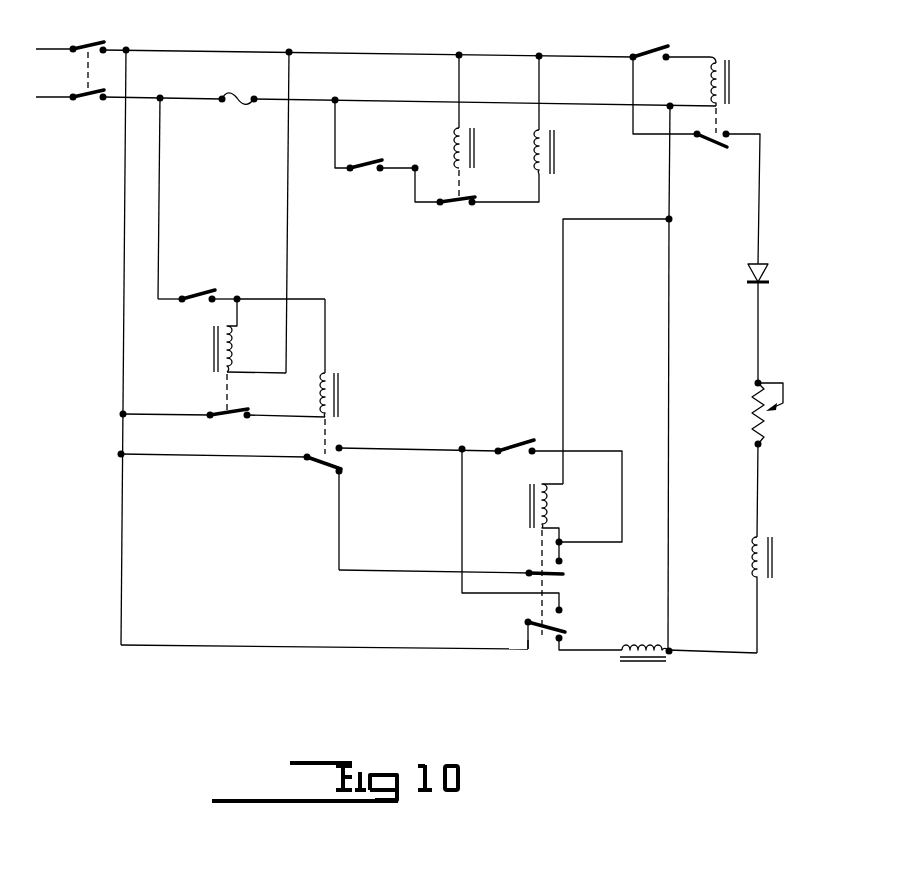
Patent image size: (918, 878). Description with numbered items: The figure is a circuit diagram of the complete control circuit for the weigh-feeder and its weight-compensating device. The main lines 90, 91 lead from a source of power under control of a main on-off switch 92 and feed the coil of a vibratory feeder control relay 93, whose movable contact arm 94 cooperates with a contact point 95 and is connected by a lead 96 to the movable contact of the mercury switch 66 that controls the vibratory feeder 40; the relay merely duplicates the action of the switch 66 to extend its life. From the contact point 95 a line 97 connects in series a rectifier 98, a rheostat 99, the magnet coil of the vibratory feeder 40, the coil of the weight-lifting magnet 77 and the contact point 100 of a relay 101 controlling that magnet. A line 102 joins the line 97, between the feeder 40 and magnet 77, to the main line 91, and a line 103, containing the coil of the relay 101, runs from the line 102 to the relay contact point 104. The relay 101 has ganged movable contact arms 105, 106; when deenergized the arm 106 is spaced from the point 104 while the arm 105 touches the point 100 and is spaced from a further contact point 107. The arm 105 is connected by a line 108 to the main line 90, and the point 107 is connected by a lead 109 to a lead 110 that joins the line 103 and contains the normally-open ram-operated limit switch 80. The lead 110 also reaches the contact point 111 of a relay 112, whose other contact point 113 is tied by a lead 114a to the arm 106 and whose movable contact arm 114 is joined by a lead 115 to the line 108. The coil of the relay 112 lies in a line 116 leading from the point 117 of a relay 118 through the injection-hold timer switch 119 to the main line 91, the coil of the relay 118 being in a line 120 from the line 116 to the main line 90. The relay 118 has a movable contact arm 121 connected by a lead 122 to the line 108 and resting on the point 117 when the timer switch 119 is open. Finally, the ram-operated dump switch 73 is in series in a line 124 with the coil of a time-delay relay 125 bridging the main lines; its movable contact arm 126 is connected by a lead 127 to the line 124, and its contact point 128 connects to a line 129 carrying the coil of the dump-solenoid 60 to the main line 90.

The main line 90 is at (48, 49).
The main line 91 is at (48, 97).
The main on-off switch 92 is at (93, 67).
The line 116 is at (159, 229).
The line 120 is at (289, 252).
The timer switch 119 is at (198, 289).
The relay 118 is at (209, 345).
The relay 112 is at (345, 395).
The lead 122 is at (150, 414).
The movable contact arm 121 is at (238, 412).
The point 117 is at (247, 418).
The lead 115 is at (246, 459).
The movable contact arm 114 is at (330, 466).
The contact point 113 is at (345, 471).
The contact point 111 is at (343, 447).
The lead 110 is at (413, 449).
The ram-operated limit switch 80 is at (522, 440).
The lead 109 is at (465, 493).
The relay 101 is at (527, 514).
The contact point 104 is at (564, 561).
The movable contact arm 106 is at (563, 575).
The relay contact point 107 is at (564, 611).
The lead 114a is at (455, 551).
The contact point 100 is at (566, 638).
The movable contact arm 105 is at (553, 640).
The line 108 is at (283, 646).
The weight-lifting magnet 77 is at (644, 661).
The line 102 is at (670, 364).
The line 103 is at (564, 342).
The line 124 is at (457, 82).
The time-delay relay 125 is at (478, 147).
The dump-solenoid 60 is at (560, 156).
The line 129 is at (540, 188).
The ram-operated dump switch 73 is at (367, 162).
The lead 127 is at (421, 204).
The movable contact arm 126 is at (463, 206).
The contact point 128 is at (475, 204).
The mercury switch 66 is at (651, 46).
The vibratory feeder control relay 93 is at (733, 89).
The lead 96 is at (660, 138).
The movable contact arm 94 is at (726, 147).
The contact point 95 is at (727, 133).
The line 97 is at (760, 195).
The rectifier 98 is at (770, 276).
The rheostat 99 is at (774, 409).
The vibratory feeder 40 is at (779, 557).